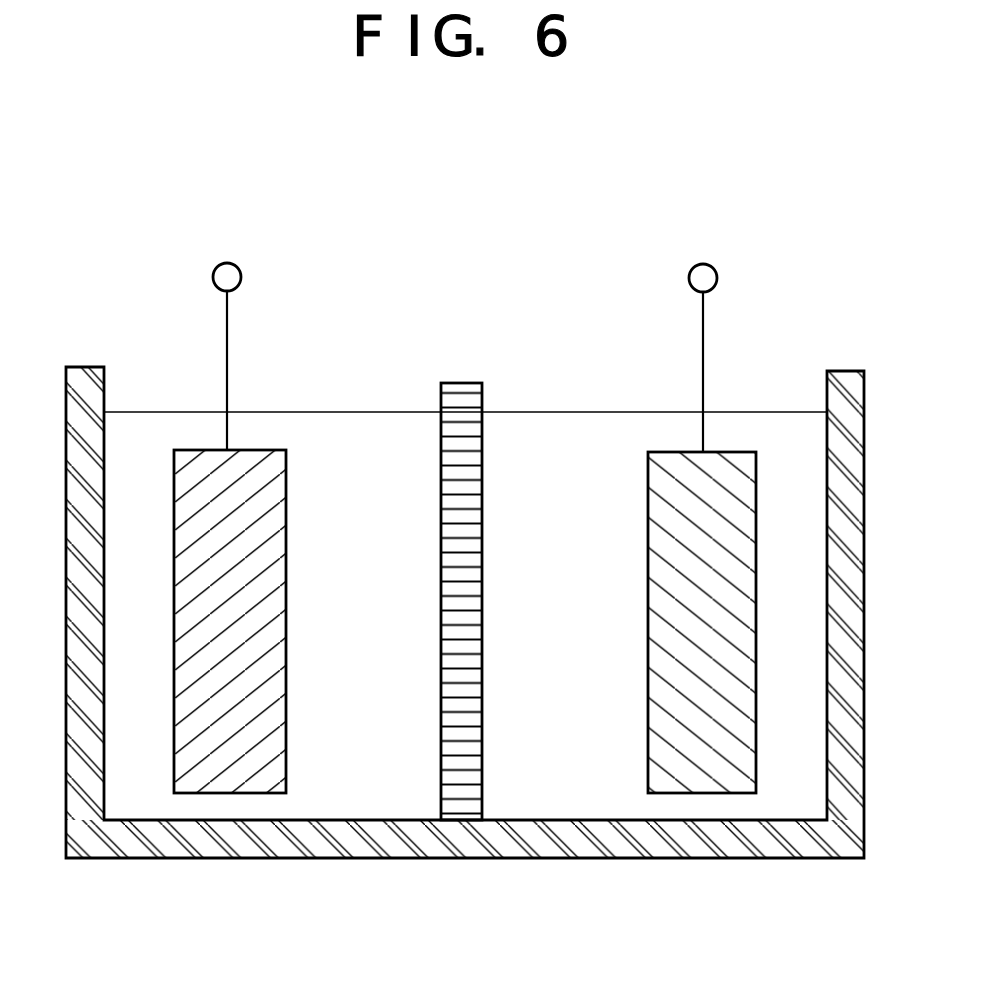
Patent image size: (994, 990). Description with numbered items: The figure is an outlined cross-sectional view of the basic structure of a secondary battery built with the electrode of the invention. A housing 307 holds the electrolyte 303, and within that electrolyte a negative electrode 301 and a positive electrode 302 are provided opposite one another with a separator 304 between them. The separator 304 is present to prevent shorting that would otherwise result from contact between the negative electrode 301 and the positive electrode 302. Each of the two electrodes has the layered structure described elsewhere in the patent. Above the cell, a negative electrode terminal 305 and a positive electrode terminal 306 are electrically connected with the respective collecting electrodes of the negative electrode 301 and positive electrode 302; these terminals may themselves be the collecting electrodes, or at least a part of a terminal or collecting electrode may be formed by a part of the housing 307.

The negative electrode 301 is at (233, 780).
The positive electrode 302 is at (705, 783).
The electrolyte 303 is at (543, 793).
The separator 304 is at (462, 382).
The negative electrode terminal 305 is at (233, 262).
The positive electrode terminal 306 is at (712, 265).
The housing 307 is at (132, 847).